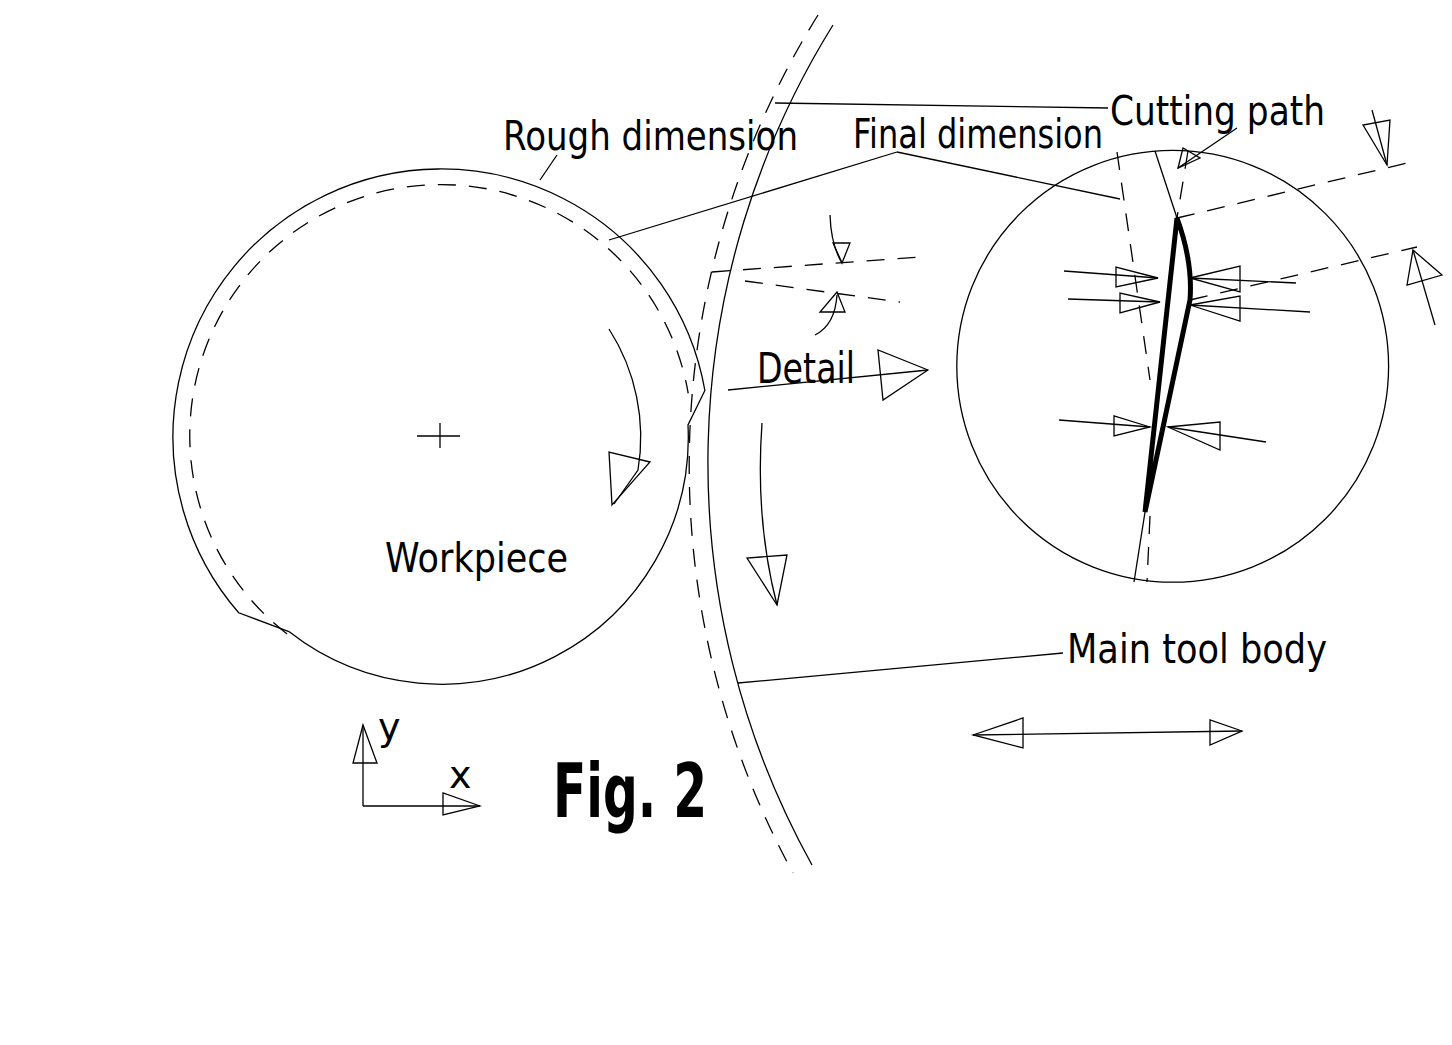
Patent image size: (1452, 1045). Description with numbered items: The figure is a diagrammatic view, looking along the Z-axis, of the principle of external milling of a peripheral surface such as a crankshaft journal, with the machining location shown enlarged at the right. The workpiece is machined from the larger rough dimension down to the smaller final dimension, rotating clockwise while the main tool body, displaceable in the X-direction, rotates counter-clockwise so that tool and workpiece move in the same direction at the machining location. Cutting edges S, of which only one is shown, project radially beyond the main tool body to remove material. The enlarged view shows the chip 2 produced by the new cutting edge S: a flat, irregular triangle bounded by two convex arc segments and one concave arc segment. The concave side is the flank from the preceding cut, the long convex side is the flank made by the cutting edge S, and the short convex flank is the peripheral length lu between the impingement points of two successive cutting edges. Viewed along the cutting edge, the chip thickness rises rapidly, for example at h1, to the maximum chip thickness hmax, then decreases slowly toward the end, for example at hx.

The chip 2 is at (1167, 365).
The cutting edge S is at (710, 273).
The chip thickness h1 is at (1182, 256).
The maximum chip thickness hmax is at (1219, 327).
The chip thickness at the end hx is at (1181, 426).
The peripheral length lu is at (1399, 217).